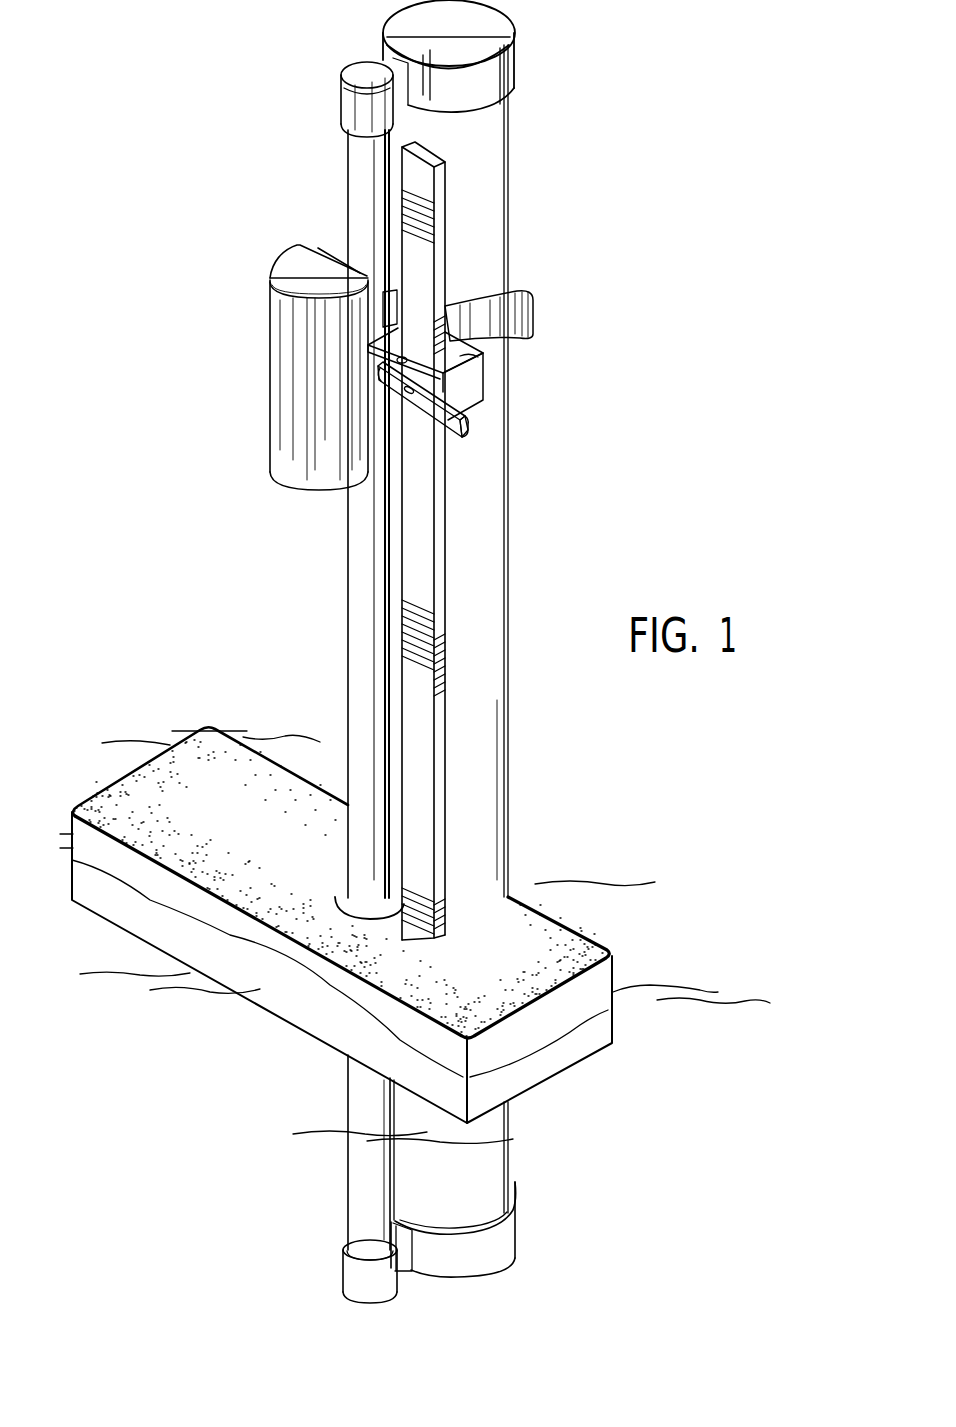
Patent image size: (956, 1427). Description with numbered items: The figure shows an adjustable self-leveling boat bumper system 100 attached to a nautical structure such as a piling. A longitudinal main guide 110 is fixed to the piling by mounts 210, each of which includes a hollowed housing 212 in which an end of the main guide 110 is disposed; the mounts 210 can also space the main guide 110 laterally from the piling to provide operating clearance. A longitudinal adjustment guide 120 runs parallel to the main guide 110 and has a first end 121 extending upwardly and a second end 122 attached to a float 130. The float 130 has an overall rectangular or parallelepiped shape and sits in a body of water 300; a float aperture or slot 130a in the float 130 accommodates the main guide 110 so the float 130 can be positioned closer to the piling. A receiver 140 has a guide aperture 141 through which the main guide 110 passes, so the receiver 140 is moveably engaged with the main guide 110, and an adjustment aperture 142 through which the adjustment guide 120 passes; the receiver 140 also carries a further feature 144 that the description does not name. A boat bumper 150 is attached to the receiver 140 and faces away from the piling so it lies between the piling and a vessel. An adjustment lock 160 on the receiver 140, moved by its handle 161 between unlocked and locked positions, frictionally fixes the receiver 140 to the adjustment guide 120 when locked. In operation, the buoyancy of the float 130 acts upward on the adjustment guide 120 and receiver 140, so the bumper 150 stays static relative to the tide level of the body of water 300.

The adjustable self-leveling boat bumper system 100 is at (216, 79).
The longitudinal main guide 110 is at (358, 180).
The longitudinal adjustment guide 120 is at (432, 551).
The first end 121 is at (425, 188).
The second end 122 is at (420, 920).
The float 130 is at (615, 956).
The float aperture or slot 130a is at (338, 890).
The receiver 140 is at (472, 395).
The guide aperture 141 is at (375, 342).
The adjustment aperture 142 is at (447, 372).
The strap 144 is at (534, 302).
The boat bumper 150 is at (283, 333).
The adjustment lock 160 is at (380, 385).
The handle 161 is at (464, 437).
The mount 210 is at (515, 70).
The hollowed housing 212 is at (345, 97).
The body of water 300 is at (122, 1093).